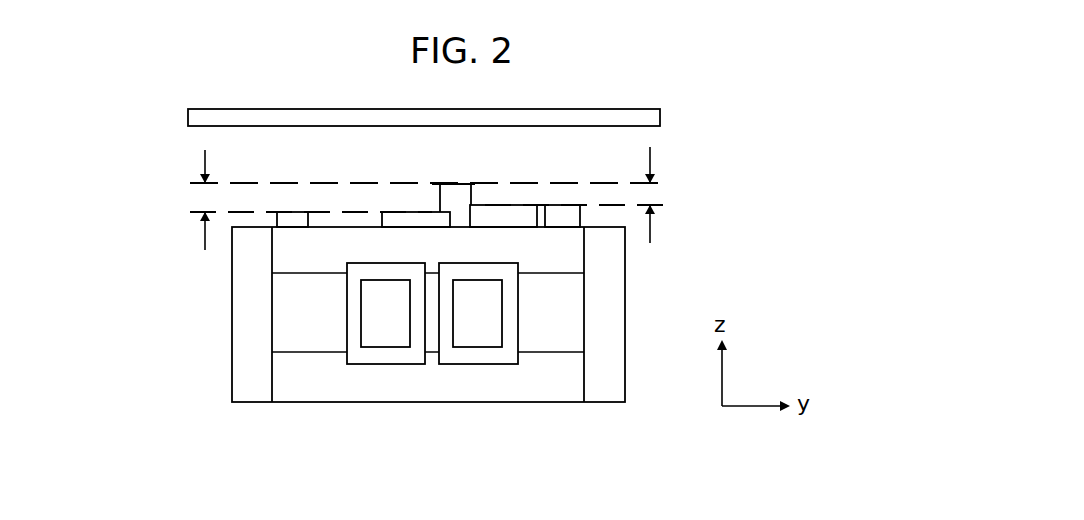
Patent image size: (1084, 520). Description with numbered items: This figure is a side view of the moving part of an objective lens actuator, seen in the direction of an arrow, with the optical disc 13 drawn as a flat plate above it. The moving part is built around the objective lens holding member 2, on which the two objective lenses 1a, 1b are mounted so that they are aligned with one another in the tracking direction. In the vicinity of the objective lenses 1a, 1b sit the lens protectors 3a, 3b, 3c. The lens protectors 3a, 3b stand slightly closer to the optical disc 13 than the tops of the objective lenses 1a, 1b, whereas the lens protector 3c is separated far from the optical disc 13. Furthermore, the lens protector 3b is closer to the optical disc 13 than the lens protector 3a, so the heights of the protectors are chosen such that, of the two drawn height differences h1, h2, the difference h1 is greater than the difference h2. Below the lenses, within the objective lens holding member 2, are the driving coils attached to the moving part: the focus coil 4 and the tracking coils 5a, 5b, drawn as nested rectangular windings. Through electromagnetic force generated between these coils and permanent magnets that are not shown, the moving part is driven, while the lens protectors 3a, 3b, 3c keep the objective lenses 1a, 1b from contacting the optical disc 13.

The optical disc 13 is at (648, 117).
The objective lens holding member 2 is at (552, 383).
The focus coil 4 is at (302, 340).
The tracking coil 5a is at (385, 353).
The tracking coil 5b is at (478, 353).
The lens protector 3a is at (297, 212).
The objective lens 1a is at (413, 212).
The lens protector 3c is at (458, 183).
The objective lens 1b is at (508, 208).
The lens protector 3b is at (558, 208).
The difference of heights h1 is at (205, 162).
The difference of heights h2 is at (652, 163).